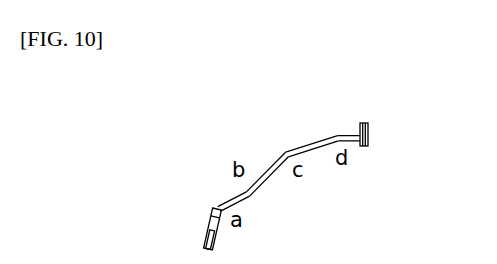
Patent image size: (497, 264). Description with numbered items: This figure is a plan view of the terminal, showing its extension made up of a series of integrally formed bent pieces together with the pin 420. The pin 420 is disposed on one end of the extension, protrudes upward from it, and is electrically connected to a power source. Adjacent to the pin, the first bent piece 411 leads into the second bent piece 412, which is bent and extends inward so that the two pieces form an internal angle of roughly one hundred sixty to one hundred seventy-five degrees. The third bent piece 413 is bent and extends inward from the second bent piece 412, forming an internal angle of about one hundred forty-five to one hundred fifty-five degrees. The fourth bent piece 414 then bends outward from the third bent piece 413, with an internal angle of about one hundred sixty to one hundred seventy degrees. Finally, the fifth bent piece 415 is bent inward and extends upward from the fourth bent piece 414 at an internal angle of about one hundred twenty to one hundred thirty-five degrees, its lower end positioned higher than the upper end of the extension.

The first bent piece 411 is at (350, 135).
The second bent piece 412 is at (313, 140).
The third bent piece 413 is at (246, 190).
The fourth bent piece 414 is at (219, 204).
The fifth bent piece 415 is at (211, 218).
The pin 420 is at (370, 135).